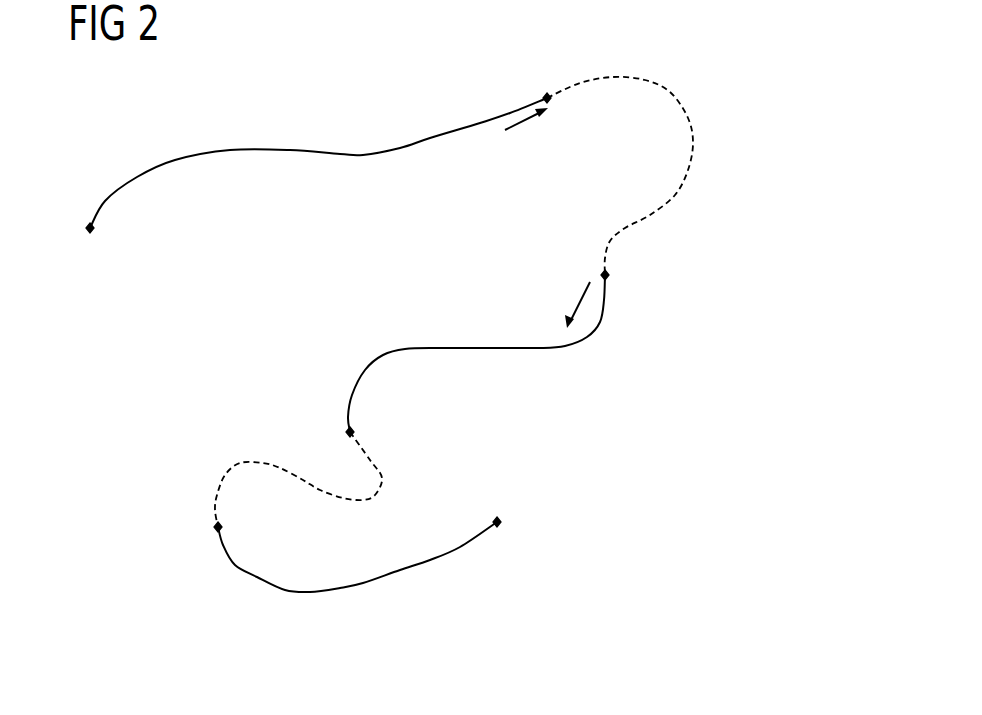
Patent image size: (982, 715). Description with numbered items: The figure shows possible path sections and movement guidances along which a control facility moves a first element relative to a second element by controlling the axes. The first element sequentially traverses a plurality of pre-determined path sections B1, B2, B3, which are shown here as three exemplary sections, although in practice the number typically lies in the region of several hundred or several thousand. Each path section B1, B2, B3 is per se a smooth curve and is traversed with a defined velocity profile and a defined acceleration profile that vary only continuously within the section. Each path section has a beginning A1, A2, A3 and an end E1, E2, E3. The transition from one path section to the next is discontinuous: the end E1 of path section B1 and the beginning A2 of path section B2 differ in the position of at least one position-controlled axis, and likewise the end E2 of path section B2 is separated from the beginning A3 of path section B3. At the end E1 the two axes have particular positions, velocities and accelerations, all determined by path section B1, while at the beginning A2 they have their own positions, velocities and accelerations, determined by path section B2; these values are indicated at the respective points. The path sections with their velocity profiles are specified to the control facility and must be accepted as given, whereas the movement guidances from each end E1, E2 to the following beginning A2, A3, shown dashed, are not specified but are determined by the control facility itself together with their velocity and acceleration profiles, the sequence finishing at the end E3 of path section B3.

The beginning of path section B1 A1 is at (90, 228).
The path section B1 is at (317, 153).
The end of path section B1 E1 is at (547, 98).
The beginning of path section B2 A2 is at (605, 275).
The path section B2 is at (493, 350).
The end of path section B2 E2 is at (350, 432).
The beginning of path section B3 A3 is at (218, 527).
The path section B3 is at (323, 593).
The end of path section B3 E3 is at (497, 522).